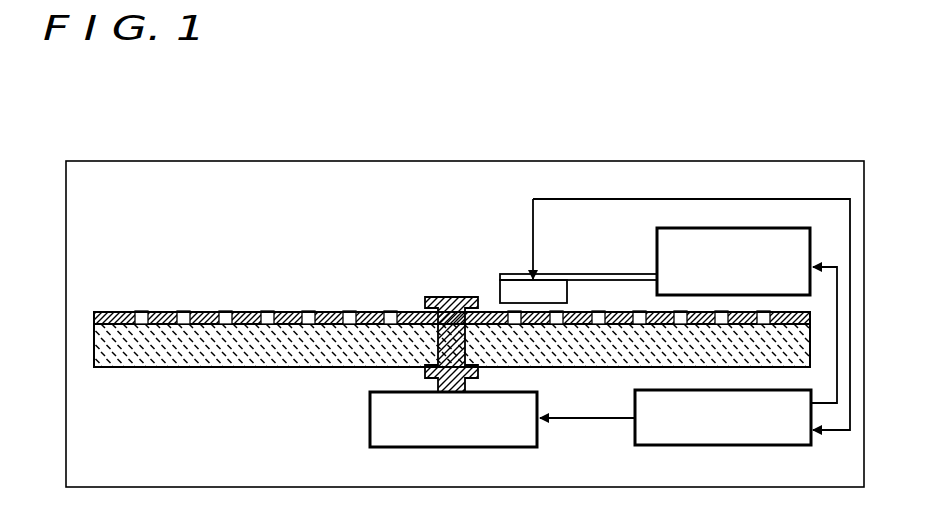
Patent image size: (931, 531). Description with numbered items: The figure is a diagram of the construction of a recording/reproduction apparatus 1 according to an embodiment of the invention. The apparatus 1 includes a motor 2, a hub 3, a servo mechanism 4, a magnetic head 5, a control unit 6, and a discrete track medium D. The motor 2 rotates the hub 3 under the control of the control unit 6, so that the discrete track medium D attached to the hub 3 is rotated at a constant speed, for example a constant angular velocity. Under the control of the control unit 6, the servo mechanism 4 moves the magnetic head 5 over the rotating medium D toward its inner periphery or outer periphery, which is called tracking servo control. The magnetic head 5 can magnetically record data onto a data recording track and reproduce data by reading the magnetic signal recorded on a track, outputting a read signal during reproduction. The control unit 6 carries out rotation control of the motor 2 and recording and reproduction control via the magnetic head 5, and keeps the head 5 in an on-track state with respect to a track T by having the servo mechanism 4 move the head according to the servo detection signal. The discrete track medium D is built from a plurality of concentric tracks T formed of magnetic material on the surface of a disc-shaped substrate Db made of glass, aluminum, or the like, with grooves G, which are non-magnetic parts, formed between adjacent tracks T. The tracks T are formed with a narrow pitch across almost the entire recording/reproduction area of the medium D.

The recording/reproduction apparatus 1 is at (125, 160).
The motor 2 is at (370, 424).
The hub 3 is at (445, 297).
The servo mechanism 4 is at (770, 228).
The magnetic head 5 is at (507, 292).
The control unit 6 is at (635, 392).
The discrete track medium D is at (162, 382).
The substrate Db is at (272, 366).
The groove G is at (390, 321).
The track T is at (370, 312).